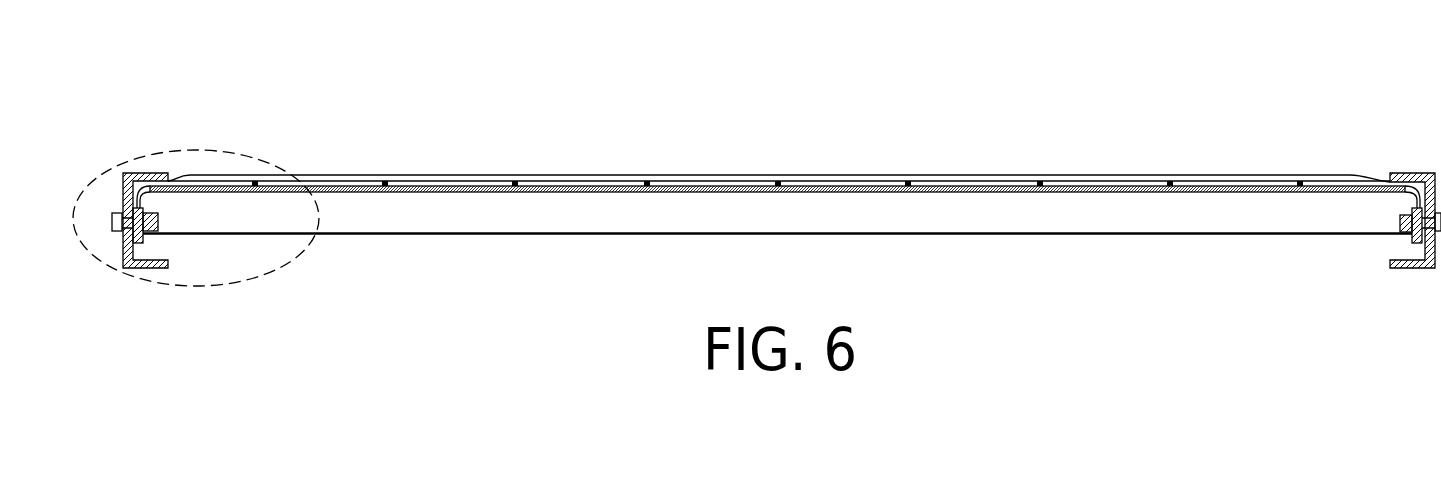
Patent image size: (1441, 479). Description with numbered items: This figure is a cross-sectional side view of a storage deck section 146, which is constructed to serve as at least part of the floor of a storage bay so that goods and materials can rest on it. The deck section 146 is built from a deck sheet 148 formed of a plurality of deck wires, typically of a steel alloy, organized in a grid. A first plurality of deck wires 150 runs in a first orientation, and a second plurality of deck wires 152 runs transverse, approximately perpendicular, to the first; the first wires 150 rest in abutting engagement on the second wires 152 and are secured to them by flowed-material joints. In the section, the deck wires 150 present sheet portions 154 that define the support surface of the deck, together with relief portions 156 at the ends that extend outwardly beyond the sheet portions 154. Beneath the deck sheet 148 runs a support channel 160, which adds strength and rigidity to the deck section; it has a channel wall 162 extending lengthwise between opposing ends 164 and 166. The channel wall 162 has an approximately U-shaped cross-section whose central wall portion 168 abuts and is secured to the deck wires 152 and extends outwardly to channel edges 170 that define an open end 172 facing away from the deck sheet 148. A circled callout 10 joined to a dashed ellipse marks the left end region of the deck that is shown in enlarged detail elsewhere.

The detail region of panel edge 10 is at (272, 163).
The storage deck section 146 is at (928, 120).
The deck sheet 148 is at (797, 157).
The first plurality of deck wires 150 is at (682, 173).
The second plurality of deck wires 152 is at (647, 187).
The sheet portions 154 is at (470, 177).
The relief portions 156 is at (180, 177).
The support channel 160 is at (1105, 187).
The channel wall 162 is at (1250, 188).
The end of channel wall 164 is at (190, 252).
The end of channel wall 166 is at (1365, 248).
The central wall portion 168 is at (977, 192).
The channel edges 170 is at (423, 233).
The open end 172 is at (542, 220).